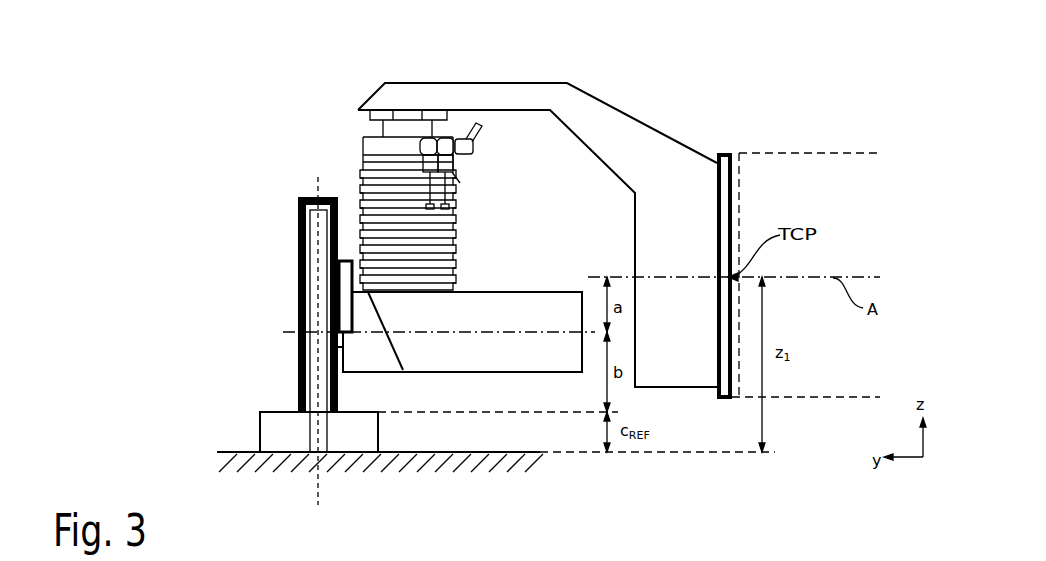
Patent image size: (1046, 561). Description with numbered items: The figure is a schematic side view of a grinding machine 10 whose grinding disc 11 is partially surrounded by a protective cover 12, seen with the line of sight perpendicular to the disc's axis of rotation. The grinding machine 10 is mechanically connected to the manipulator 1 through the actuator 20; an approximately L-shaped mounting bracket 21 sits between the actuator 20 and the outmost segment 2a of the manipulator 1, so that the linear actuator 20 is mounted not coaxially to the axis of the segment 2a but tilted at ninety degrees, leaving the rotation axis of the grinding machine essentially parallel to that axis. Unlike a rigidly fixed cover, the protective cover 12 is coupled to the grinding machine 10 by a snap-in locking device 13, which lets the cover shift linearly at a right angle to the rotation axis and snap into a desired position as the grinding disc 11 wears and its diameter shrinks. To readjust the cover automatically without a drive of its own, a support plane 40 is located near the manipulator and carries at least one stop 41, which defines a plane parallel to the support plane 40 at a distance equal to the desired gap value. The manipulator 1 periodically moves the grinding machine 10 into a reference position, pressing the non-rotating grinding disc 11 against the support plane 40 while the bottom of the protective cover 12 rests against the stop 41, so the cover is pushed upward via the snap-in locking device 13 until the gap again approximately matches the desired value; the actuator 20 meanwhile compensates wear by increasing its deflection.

The manipulator 1 is at (824, 235).
The outmost segment 2a is at (778, 153).
The grinding machine 10 is at (543, 362).
The grinding disc 11 is at (322, 238).
The protective cover 12 is at (298, 198).
The snap-in locking device 13 is at (345, 258).
The actuator 20 is at (372, 136).
The mounting bracket 21 is at (672, 100).
The support plane 40 is at (230, 452).
The stop 41 is at (272, 428).